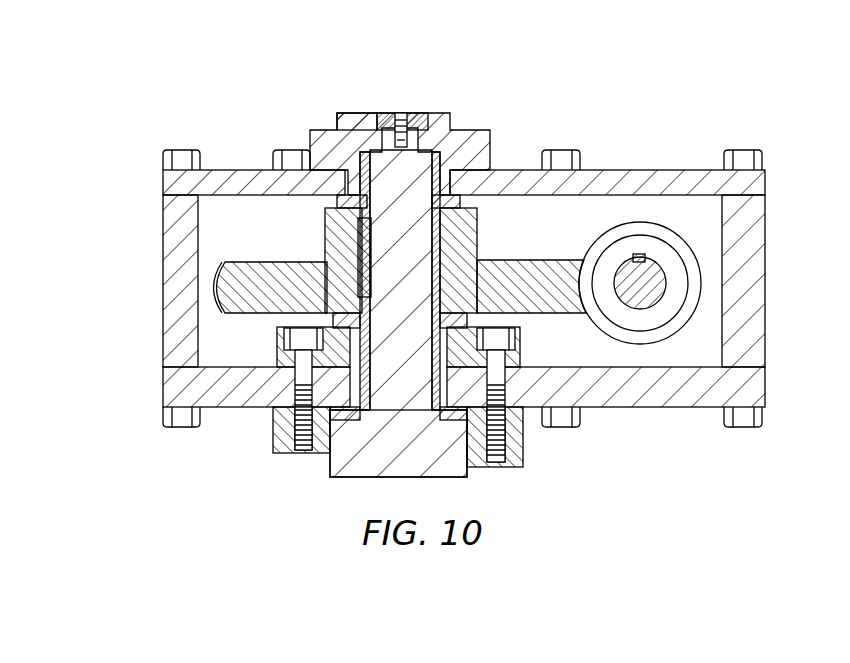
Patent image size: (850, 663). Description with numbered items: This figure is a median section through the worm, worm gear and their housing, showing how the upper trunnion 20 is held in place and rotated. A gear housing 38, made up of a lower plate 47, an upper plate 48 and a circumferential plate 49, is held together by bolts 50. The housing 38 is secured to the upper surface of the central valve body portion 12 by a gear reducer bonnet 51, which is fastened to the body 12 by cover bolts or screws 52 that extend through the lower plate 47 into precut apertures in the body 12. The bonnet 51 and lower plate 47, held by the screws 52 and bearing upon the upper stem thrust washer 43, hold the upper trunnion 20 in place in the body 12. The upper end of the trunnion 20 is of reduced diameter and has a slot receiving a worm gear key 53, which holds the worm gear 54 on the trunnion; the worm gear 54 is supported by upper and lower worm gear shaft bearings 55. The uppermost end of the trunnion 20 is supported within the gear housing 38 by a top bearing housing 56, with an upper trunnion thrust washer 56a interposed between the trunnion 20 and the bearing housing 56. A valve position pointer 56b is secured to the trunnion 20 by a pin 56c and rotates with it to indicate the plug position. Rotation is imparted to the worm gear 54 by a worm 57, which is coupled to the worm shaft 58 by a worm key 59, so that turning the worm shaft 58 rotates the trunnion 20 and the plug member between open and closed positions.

The central valve body portion 12 is at (517, 445).
The upper trunnion 20 is at (367, 468).
The gear housing 38 is at (765, 215).
The stem thrust washer 43 is at (333, 418).
The lower plate 47 is at (683, 400).
The upper plate 48 is at (640, 185).
The circumferential plate 49 is at (748, 308).
The bolts 50 is at (293, 155).
The gear reducer bonnet 51 is at (518, 337).
The cover bolts or screws 52 is at (307, 452).
The worm gear key 53 is at (370, 253).
The worm gear 54 is at (272, 277).
The worm gear shaft bearings 55 is at (457, 198).
The top bearing housing 56 is at (467, 137).
The upper trunnion thrust washer 56a is at (390, 162).
The valve position pointer 56b is at (358, 118).
The pin 56c is at (407, 113).
The worm 57 is at (667, 330).
The worm shaft 58 is at (653, 275).
The worm key 59 is at (637, 258).